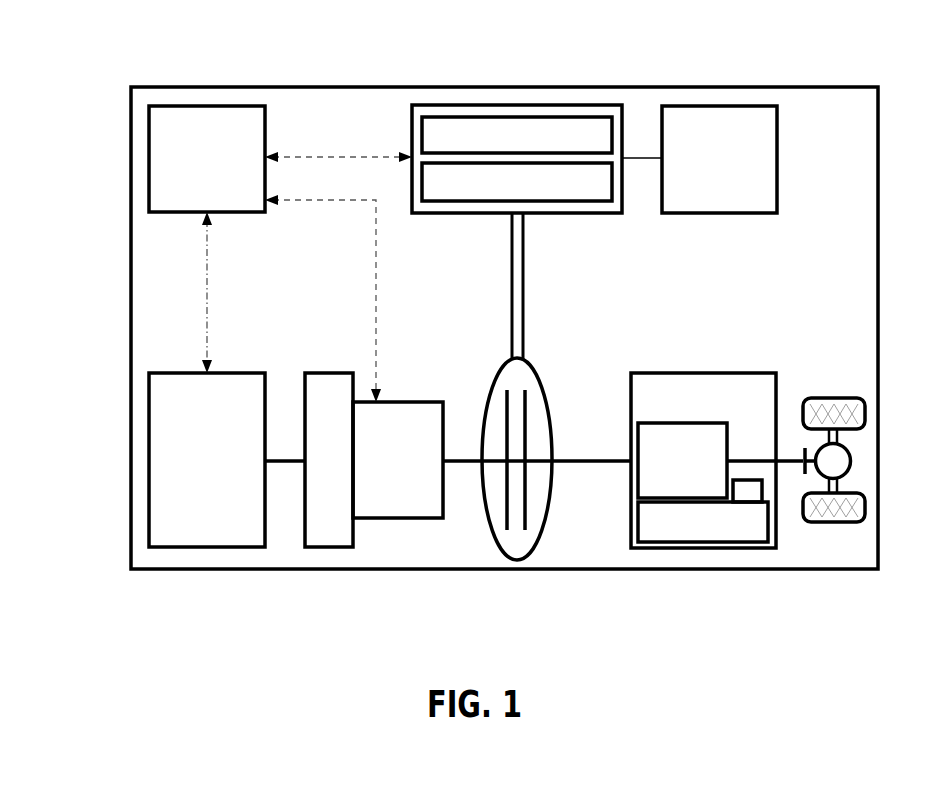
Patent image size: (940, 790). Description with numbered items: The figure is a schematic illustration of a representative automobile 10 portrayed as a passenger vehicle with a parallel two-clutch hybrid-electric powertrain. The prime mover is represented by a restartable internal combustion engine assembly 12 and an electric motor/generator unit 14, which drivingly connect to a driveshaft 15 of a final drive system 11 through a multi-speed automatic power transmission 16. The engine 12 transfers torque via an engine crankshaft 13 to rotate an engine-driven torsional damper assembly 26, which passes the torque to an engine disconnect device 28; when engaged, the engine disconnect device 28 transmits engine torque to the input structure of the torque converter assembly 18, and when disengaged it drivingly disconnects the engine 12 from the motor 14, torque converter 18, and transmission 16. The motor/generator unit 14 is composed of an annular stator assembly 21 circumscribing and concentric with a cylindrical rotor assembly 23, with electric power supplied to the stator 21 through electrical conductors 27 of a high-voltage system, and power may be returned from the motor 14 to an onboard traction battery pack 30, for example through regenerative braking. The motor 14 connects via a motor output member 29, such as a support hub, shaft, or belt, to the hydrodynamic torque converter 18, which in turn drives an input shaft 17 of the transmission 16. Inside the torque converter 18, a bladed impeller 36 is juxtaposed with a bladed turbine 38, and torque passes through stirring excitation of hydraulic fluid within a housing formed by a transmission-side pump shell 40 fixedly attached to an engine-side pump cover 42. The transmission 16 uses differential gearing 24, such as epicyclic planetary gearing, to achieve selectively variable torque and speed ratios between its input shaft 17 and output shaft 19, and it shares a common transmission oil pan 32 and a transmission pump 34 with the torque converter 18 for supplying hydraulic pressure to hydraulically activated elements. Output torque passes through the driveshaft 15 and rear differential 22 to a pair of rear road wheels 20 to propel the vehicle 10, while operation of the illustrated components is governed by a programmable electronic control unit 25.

The automobile 10 is at (118, 66).
The final drive system 11 is at (862, 268).
The internal combustion engine assembly 12 is at (162, 373).
The engine crankshaft 13 is at (283, 460).
The electric motor/generator unit 14 is at (484, 123).
The driveshaft 15 is at (793, 457).
The multi-speed automatic power transmission 16 is at (703, 469).
The input shaft 17 is at (585, 460).
The torque converter assembly 18 is at (531, 500).
The output shaft 19 is at (745, 460).
The rear road wheels 20 is at (830, 398).
The stator assembly 21 is at (422, 121).
The rear differential 22 is at (853, 456).
The rotor assembly 23 is at (418, 173).
The differential gearing 24 is at (681, 423).
The electronic control unit 25 is at (163, 105).
The torsional damper assembly 26 is at (346, 373).
The electrical conductors/cables 27 is at (634, 157).
The engine disconnect device 28 is at (413, 402).
The motor output member 29 is at (512, 238).
The traction battery pack 30 is at (693, 106).
The transmission oil pan 32 is at (680, 522).
The transmission pump 34 is at (745, 492).
The impeller 36 is at (497, 532).
The turbine 38 is at (534, 532).
The pump shell 40 is at (550, 490).
The pump cover 42 is at (486, 515).